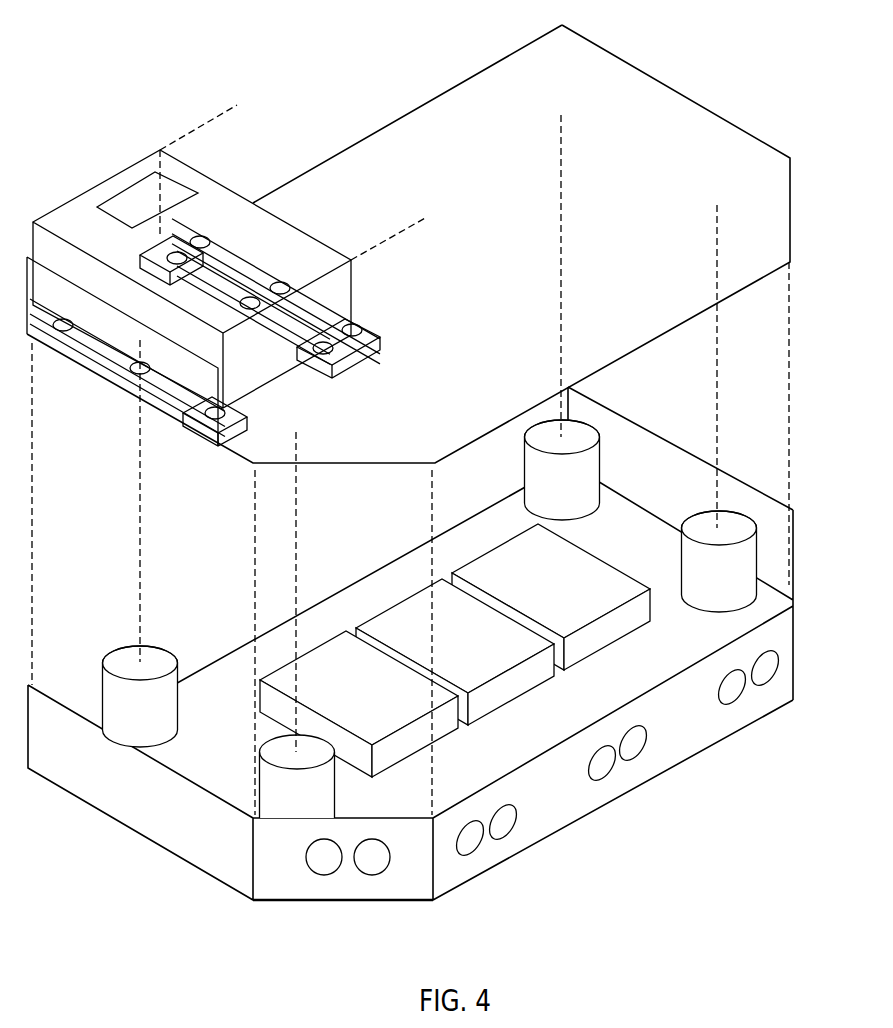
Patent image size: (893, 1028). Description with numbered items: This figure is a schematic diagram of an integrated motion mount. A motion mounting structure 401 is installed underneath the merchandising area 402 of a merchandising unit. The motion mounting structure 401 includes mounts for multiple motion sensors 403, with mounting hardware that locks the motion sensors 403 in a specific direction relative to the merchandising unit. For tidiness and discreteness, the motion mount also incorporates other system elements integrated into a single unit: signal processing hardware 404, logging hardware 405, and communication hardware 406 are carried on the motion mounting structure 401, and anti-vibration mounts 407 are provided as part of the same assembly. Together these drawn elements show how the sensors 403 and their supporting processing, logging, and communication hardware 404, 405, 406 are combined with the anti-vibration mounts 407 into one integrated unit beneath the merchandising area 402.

The motion mounting structure 401 is at (521, 735).
The merchandising area 402 is at (97, 186).
The motion sensors 403 is at (815, 633).
The signal processing hardware 404 is at (517, 562).
The logging hardware 405 is at (420, 617).
The communication hardware 406 is at (322, 670).
The anti-vibration mounts 407 is at (123, 720).